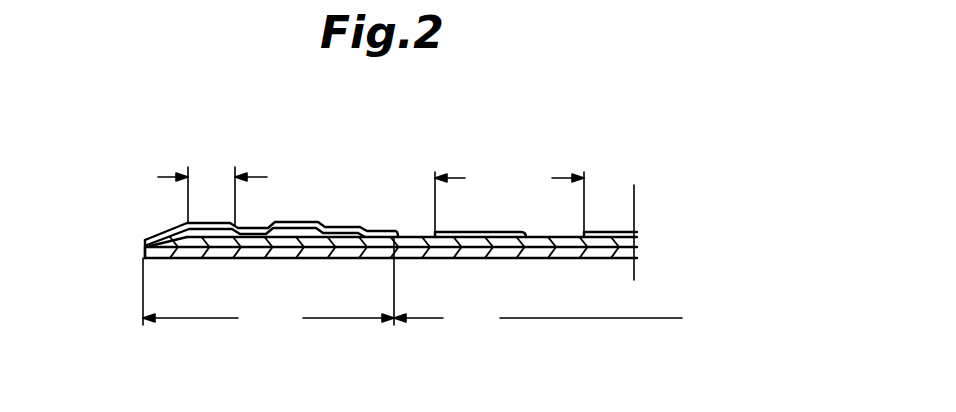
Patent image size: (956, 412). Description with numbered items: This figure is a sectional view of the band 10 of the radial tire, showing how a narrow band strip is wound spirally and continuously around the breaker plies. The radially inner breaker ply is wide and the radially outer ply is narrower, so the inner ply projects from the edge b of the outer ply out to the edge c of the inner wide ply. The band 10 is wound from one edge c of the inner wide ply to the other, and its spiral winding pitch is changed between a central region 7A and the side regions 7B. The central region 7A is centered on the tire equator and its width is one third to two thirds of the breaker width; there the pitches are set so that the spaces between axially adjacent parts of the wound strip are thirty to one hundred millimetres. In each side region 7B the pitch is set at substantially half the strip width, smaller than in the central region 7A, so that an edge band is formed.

The band 10 is at (165, 246).
The edge of outer ply b is at (186, 236).
The edge of inner wide ply c is at (143, 257).
The side region 7B is at (268, 287).
The central region 7A is at (538, 261).